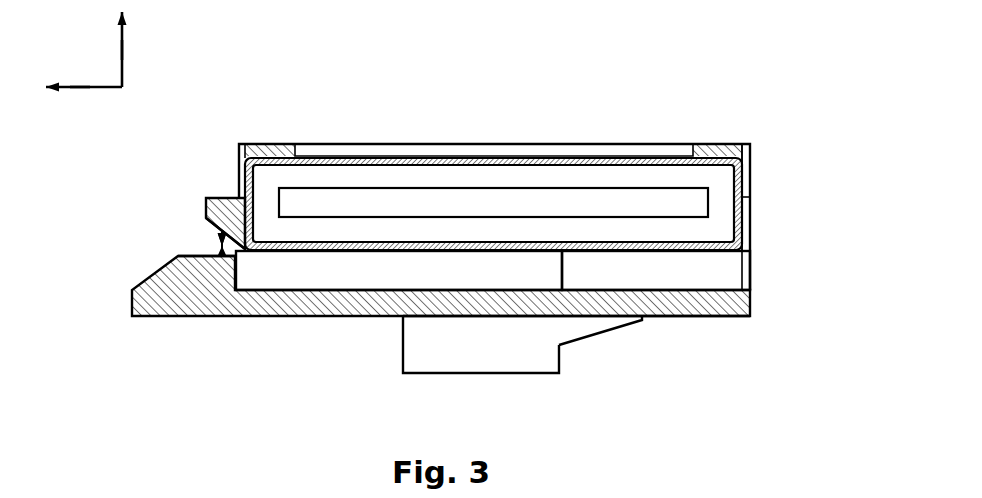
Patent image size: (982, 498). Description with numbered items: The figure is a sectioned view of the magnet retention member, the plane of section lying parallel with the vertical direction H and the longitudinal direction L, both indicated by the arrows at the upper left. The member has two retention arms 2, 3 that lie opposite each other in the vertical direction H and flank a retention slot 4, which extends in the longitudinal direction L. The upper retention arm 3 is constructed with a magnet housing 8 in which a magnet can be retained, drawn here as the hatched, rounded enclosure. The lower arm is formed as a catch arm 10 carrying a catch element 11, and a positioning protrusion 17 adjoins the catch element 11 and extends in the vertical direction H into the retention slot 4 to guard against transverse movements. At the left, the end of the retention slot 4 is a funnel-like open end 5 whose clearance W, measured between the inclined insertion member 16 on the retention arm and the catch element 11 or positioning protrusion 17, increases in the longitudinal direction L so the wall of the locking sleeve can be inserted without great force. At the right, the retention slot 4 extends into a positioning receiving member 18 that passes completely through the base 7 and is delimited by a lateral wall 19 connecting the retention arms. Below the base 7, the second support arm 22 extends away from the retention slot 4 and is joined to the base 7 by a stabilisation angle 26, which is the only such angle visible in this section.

The retention arm 2 is at (483, 293).
The catch arm 10 is at (295, 326).
The retention arm 3 is at (493, 174).
The magnet housing 8 is at (451, 129).
The retention slot 4 is at (477, 284).
The open end 5 is at (185, 236).
The base 7 is at (700, 319).
The catch element 11 is at (170, 306).
The inclined insertion member 16 is at (213, 225).
The positioning protrusion 17 is at (218, 288).
The positioning receiving member 18 is at (762, 272).
The lateral wall 19 is at (645, 284).
The second support arm 22 is at (402, 348).
The stabilisation angle 26 is at (600, 327).
The clearance W is at (217, 242).
The vertical direction H is at (123, 50).
The longitudinal direction L is at (78, 88).